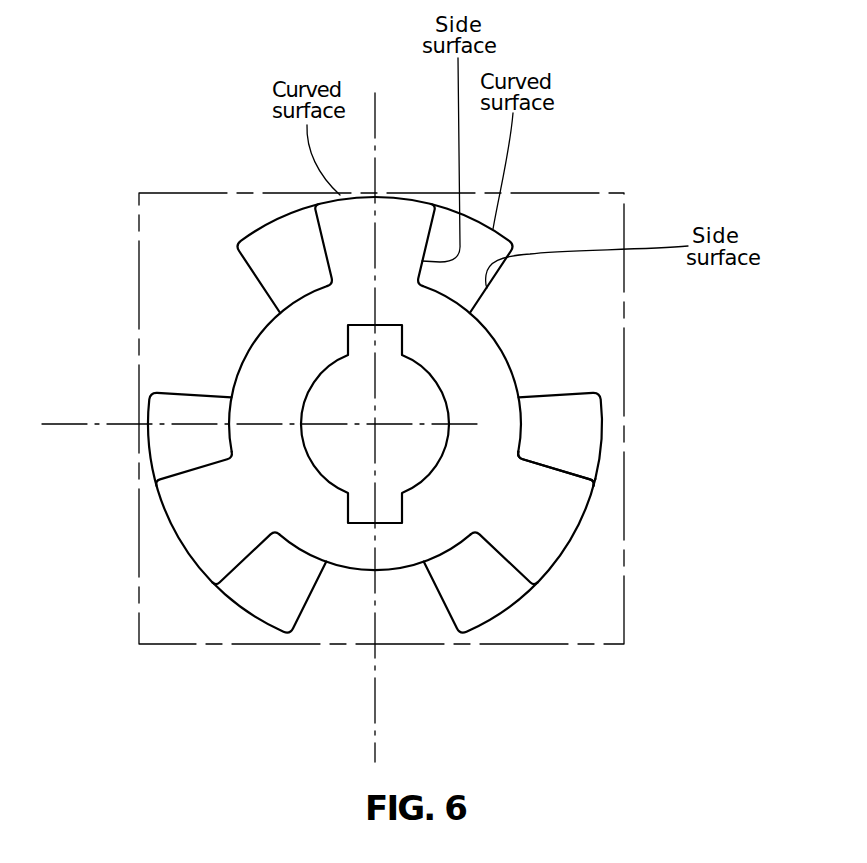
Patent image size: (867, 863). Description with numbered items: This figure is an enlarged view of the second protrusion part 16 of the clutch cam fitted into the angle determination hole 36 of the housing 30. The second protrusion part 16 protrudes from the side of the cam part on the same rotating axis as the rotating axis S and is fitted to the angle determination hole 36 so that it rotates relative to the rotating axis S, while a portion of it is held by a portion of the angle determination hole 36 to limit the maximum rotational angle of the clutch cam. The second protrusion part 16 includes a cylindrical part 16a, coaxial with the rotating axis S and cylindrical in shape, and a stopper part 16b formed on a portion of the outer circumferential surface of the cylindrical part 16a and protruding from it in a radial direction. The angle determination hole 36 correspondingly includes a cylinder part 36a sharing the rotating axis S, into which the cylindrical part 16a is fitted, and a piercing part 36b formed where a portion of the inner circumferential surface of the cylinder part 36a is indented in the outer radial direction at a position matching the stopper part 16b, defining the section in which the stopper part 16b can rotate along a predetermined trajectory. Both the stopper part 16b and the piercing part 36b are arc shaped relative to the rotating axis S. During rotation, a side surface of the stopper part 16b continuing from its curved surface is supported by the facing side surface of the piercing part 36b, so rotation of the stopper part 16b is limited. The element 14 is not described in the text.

The rotating axis S is at (373, 423).
The shaft hole 14 is at (340, 452).
The second protrusion part 16 is at (745, 525).
The cylindrical part 16a is at (397, 567).
The stopper part 16b is at (543, 534).
The housing 30 is at (598, 305).
The angle determination hole 36 is at (745, 368).
The cylinder part 36a is at (495, 340).
The piercing part 36b is at (600, 427).